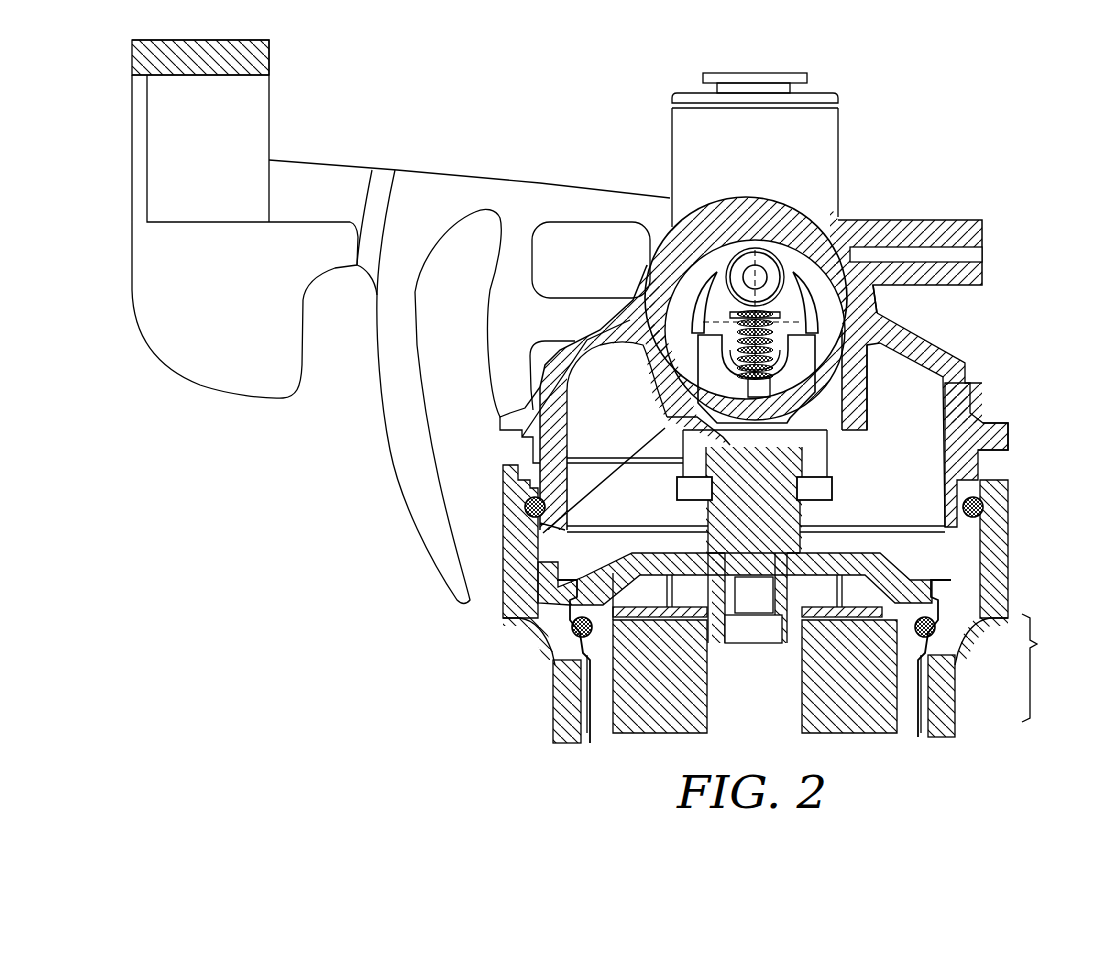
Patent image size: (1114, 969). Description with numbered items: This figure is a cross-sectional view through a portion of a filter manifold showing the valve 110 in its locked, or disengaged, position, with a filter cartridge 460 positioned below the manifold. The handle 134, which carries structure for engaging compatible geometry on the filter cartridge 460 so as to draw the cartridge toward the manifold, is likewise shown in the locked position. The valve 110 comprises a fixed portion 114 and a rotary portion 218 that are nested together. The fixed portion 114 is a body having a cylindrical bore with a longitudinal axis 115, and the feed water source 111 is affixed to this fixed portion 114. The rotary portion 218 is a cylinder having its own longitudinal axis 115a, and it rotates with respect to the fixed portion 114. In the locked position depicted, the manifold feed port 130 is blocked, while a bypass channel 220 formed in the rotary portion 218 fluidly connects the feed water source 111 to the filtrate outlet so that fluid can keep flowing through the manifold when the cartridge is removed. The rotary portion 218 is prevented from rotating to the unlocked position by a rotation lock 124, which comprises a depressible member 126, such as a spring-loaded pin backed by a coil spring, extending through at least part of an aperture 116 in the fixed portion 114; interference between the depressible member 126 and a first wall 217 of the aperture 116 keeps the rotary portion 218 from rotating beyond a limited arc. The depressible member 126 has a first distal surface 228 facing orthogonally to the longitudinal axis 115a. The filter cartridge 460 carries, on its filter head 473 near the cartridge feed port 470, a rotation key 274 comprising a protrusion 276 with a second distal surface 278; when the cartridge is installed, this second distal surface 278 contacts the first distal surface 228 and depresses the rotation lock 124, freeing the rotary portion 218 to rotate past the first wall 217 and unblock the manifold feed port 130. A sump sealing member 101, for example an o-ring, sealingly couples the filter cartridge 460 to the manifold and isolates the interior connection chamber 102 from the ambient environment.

The sump sealing member 101 is at (990, 507).
The interior connection chamber 102 is at (900, 375).
The valve 110 is at (840, 222).
The feed water source 111 is at (812, 135).
The fixed portion 114 is at (655, 288).
The longitudinal axis 115 is at (733, 315).
The longitudinal axis 115a is at (624, 259).
The aperture 116 is at (850, 394).
The rotation lock 124 is at (700, 395).
The depressible member 126 is at (715, 413).
The manifold feed port 130 is at (700, 508).
The handle 134 is at (306, 178).
The first wall 217 is at (880, 312).
The rotary portion 218 is at (707, 270).
The bypass channel 220 is at (755, 265).
The first distal surface 228 is at (690, 433).
The rotation key 274 is at (790, 452).
The protrusion 276 is at (792, 493).
The second distal surface 278 is at (840, 414).
The filter cartridge 460 is at (816, 678).
The cartridge feed port 470 is at (720, 537).
The filter head 473 is at (900, 565).